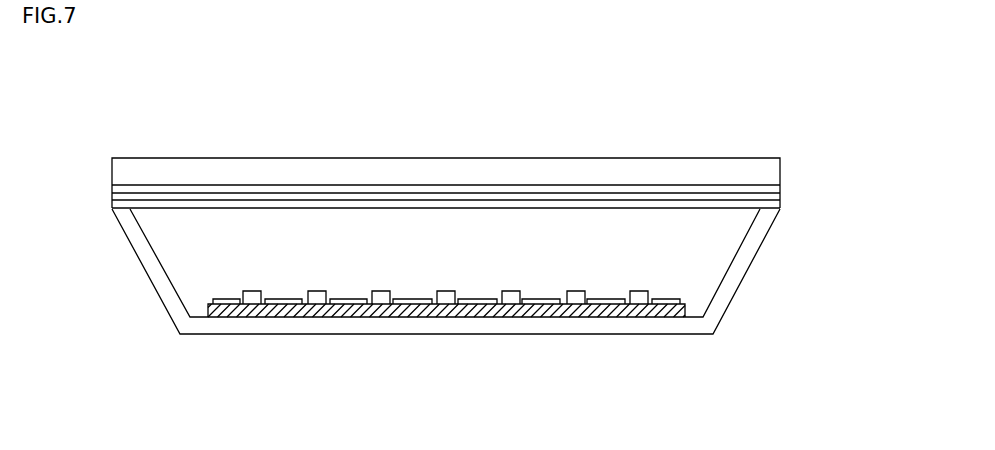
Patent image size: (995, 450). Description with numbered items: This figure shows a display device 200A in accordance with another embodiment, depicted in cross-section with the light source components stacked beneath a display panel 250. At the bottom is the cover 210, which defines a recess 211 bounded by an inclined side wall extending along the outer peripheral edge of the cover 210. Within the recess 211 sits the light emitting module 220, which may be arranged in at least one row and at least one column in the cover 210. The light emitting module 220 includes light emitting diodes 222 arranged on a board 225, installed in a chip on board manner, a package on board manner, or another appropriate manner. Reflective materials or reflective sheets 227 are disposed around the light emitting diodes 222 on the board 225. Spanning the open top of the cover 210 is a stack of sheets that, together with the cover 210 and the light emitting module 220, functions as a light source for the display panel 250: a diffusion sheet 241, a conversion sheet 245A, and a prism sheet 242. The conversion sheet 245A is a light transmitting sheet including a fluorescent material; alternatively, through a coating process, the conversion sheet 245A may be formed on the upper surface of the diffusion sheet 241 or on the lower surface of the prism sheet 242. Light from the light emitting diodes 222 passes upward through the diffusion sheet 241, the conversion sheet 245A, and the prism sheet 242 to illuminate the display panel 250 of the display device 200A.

The display device 200A is at (142, 133).
The display panel 250 is at (120, 171).
The prism sheet 242 is at (113, 192).
The conversion sheet 245A is at (112, 199).
The diffusion sheet 241 is at (782, 202).
The cover 210 is at (151, 276).
The recess 211 is at (143, 232).
The light emitting module 220 is at (387, 385).
The board 225 is at (317, 313).
The light emitting diodes 222 is at (378, 304).
The reflective sheets 227 is at (408, 299).